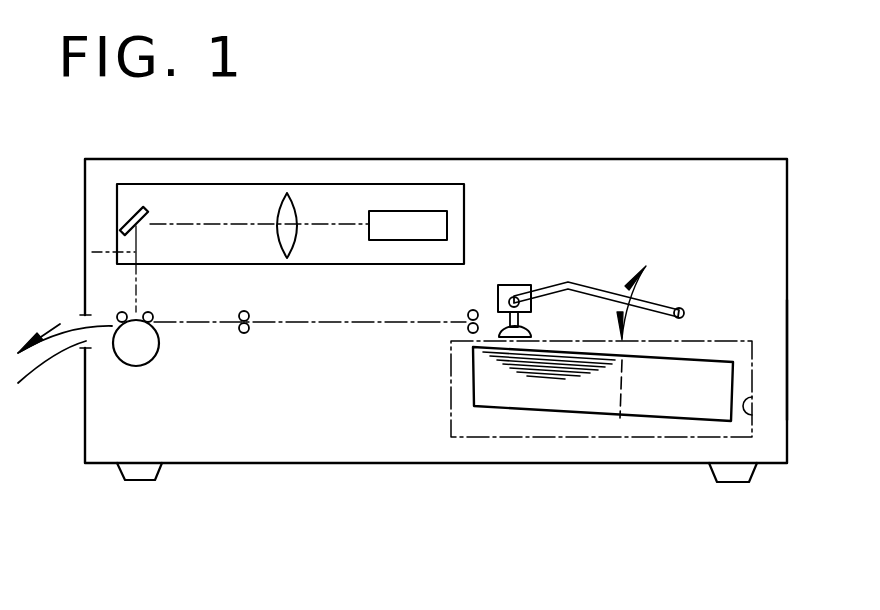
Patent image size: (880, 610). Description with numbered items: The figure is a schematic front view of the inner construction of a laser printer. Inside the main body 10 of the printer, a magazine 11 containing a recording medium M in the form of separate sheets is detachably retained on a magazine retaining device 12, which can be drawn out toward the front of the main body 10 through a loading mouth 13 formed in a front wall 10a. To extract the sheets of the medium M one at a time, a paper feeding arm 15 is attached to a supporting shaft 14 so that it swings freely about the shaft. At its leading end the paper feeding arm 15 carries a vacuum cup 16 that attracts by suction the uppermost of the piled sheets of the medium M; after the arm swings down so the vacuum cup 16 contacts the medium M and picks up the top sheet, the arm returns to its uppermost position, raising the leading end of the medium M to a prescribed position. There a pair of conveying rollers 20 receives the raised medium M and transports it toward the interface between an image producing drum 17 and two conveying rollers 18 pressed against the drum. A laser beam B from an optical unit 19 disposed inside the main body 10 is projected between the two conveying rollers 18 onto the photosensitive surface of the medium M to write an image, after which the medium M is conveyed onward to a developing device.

The main body 10 is at (568, 174).
The front wall 10a is at (776, 354).
The magazine 11 is at (522, 400).
The magazine retaining device 12 is at (609, 438).
The loading mouth 13 is at (758, 415).
The supporting shaft 14 is at (684, 314).
The paper feeding arm 15 is at (555, 284).
The vacuum cup 16 is at (532, 322).
The image producing drum 17 is at (142, 358).
The conveying rollers 18 is at (119, 312).
The optical unit 19 is at (407, 184).
The conveying rollers 20 is at (469, 311).
The laser beam B is at (92, 252).
The recording medium M is at (45, 356).